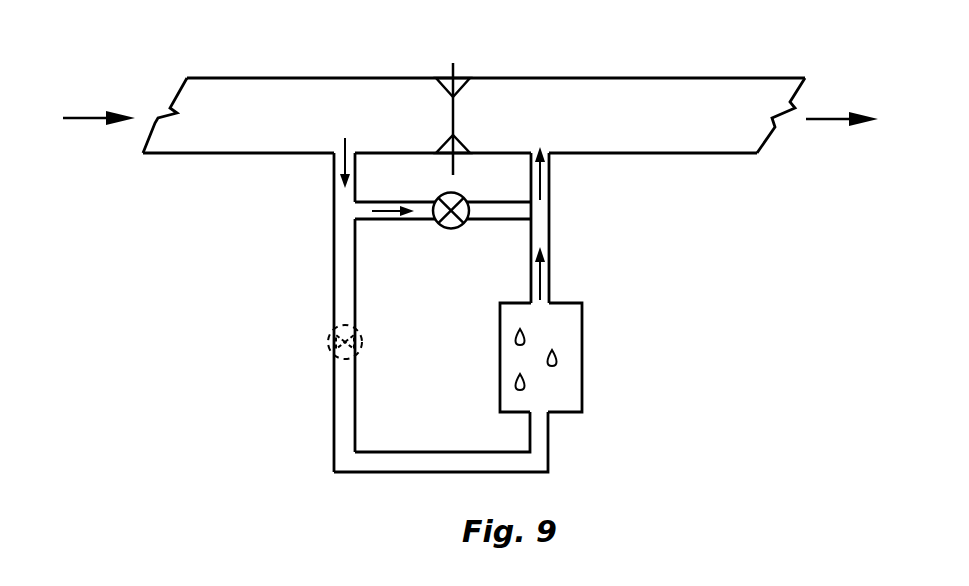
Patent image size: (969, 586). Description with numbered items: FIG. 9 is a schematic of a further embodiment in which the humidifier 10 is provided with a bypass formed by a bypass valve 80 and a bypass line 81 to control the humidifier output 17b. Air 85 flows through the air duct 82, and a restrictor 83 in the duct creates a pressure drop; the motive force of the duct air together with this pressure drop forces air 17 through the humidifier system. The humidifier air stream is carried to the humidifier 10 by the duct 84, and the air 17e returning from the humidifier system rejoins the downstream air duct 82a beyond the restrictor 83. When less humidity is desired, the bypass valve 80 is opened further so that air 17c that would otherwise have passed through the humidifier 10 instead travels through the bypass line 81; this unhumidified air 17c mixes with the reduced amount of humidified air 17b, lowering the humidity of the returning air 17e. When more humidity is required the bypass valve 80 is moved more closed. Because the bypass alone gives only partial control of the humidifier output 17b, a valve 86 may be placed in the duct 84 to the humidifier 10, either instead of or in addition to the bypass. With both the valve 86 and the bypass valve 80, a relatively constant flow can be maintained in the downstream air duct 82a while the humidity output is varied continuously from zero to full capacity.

The humidifier 10 is at (582, 362).
The air 17 is at (336, 160).
The humidifier output 17b is at (548, 278).
The bypassed air 17c is at (393, 222).
The returning air 17e is at (548, 180).
The bypass valve 80 is at (457, 194).
The bypass line 81 is at (513, 220).
The air duct 82 is at (205, 153).
The downstream air duct 82a is at (650, 78).
The restrictor 83 is at (462, 78).
The duct to the humidifier 84 is at (334, 412).
The air 85 is at (93, 118).
The valve 86 is at (326, 350).